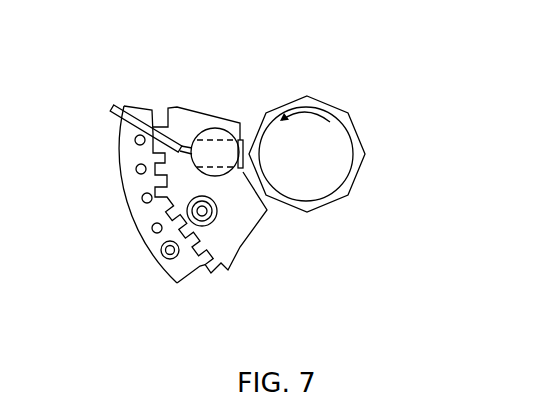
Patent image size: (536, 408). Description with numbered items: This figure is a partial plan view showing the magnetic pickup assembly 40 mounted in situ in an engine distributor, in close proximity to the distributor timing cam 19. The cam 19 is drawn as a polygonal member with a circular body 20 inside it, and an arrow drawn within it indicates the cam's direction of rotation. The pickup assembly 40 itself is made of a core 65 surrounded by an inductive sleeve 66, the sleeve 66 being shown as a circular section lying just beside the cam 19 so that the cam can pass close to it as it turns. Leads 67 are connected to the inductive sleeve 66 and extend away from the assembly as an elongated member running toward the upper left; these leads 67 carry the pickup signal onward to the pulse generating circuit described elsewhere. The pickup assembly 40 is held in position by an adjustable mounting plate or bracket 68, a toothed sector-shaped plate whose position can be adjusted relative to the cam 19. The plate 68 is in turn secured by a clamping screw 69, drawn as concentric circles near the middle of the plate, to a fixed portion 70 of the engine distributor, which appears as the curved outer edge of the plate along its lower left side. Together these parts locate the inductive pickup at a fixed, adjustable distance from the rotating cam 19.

The magnetic pickup assembly 40 is at (219, 80).
The distributor timing cam 19 is at (349, 188).
The octagonal drive member 20 is at (309, 94).
The core 65 is at (245, 139).
The inductive sleeve 66 is at (218, 172).
The leads 67 is at (118, 102).
The adjustable mounting plate 68 is at (228, 262).
The clamping screw 69 is at (210, 218).
The fixed portion 70 is at (178, 284).